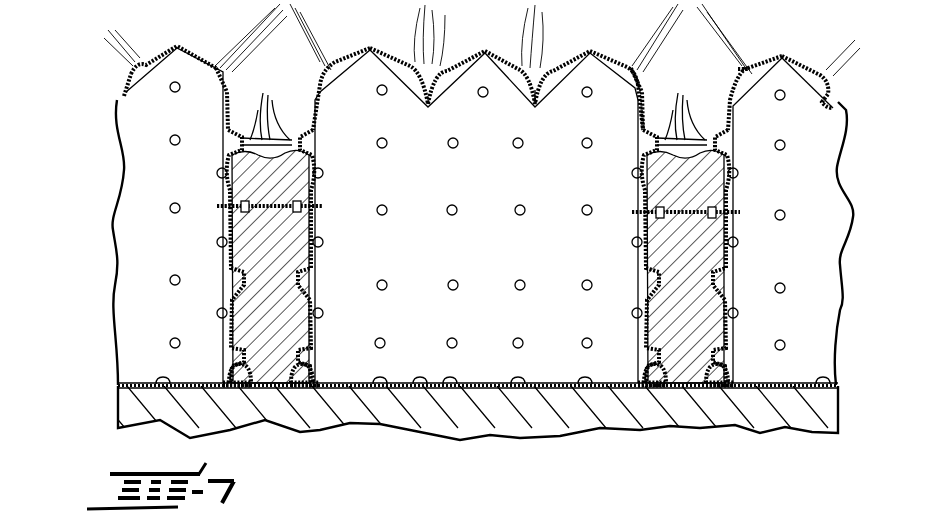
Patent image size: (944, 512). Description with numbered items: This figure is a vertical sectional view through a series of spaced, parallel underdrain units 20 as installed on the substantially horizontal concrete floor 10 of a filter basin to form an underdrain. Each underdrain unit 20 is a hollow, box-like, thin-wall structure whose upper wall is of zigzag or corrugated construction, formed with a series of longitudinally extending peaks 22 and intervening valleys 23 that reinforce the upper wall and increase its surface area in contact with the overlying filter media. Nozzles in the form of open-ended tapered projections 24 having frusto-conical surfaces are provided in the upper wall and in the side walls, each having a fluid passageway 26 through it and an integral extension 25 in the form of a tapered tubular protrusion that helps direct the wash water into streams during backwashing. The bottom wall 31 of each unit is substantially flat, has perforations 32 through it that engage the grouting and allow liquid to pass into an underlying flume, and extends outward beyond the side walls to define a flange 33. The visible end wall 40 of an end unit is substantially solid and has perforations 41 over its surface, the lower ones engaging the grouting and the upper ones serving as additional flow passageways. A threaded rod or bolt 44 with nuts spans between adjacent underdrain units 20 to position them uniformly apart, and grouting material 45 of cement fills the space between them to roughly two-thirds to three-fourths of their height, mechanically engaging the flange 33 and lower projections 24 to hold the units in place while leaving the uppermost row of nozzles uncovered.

The floor 10 is at (357, 420).
The underdrain unit 20 is at (108, 318).
The peak 22 is at (372, 48).
The valley 23 is at (540, 106).
The tapered projection 24 is at (122, 77).
The extension 25 is at (212, 66).
The fluid passageway 26 is at (214, 66).
The bottom wall 31 is at (163, 383).
The perforation 32 is at (518, 378).
The flange 33 is at (240, 380).
The end wall 40 is at (155, 262).
The perforation 41 is at (452, 139).
The threaded rod or bolt 44 is at (321, 205).
The grouting material 45 is at (300, 278).